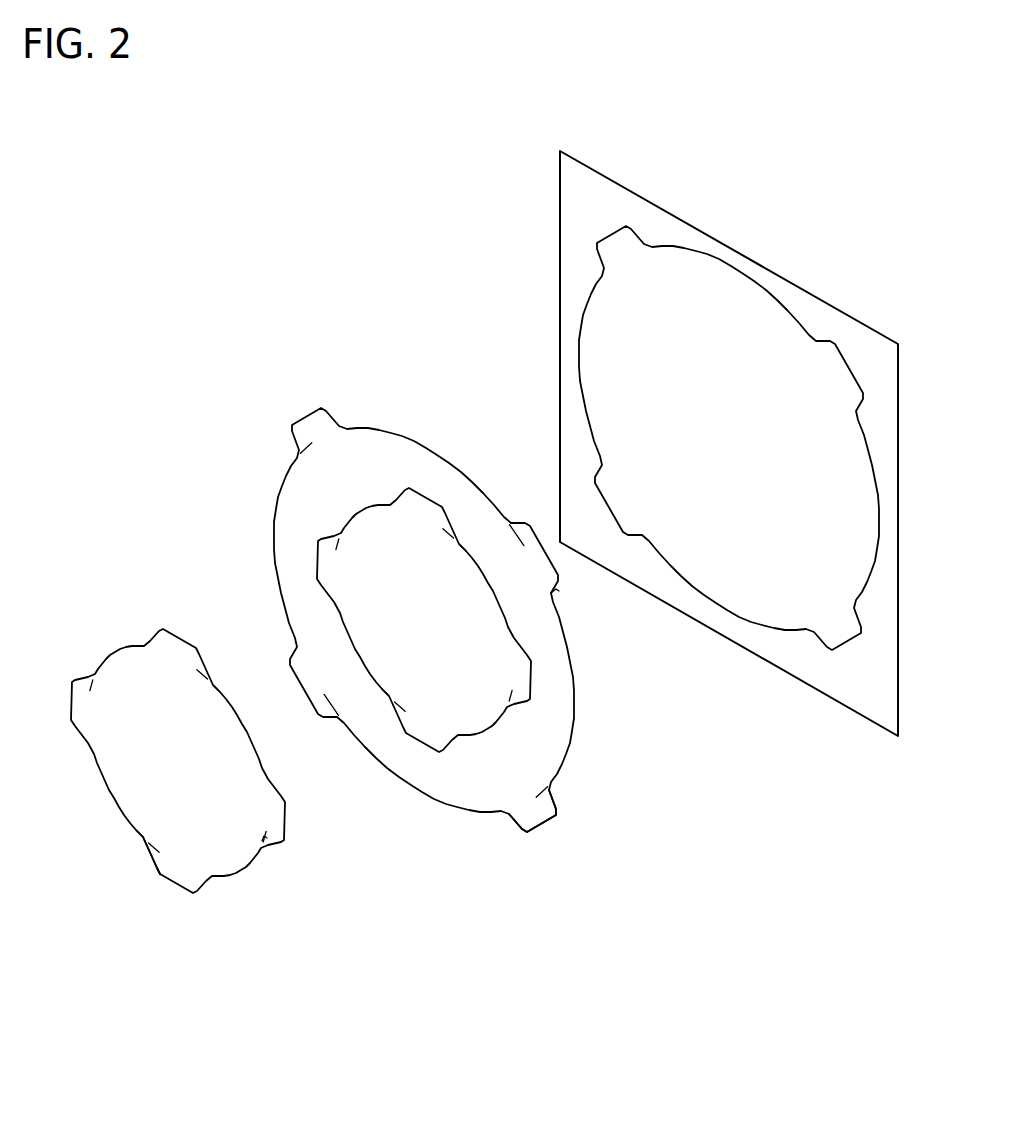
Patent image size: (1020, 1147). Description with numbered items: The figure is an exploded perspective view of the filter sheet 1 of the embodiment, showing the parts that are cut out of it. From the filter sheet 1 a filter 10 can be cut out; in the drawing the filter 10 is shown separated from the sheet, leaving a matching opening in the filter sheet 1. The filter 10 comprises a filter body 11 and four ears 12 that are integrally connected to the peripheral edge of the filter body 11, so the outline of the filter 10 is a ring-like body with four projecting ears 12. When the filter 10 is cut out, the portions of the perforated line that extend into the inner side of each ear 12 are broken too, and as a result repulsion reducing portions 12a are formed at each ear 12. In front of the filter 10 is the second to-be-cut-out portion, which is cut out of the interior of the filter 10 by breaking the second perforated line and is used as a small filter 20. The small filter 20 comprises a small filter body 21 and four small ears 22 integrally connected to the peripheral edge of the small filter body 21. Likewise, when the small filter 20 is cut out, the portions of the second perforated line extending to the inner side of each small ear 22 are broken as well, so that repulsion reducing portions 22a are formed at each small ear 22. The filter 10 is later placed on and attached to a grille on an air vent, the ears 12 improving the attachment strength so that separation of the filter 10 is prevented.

The filter sheet 1 is at (548, 270).
The filter 10 is at (462, 604).
The filter body 11 is at (427, 770).
The ear 12 is at (538, 818).
The repulsion reducing portion 12a is at (548, 594).
The small filter 20 is at (207, 748).
The small filter body 21 is at (150, 790).
The small ear 22 is at (168, 867).
The repulsion reducing portion 22a is at (282, 840).